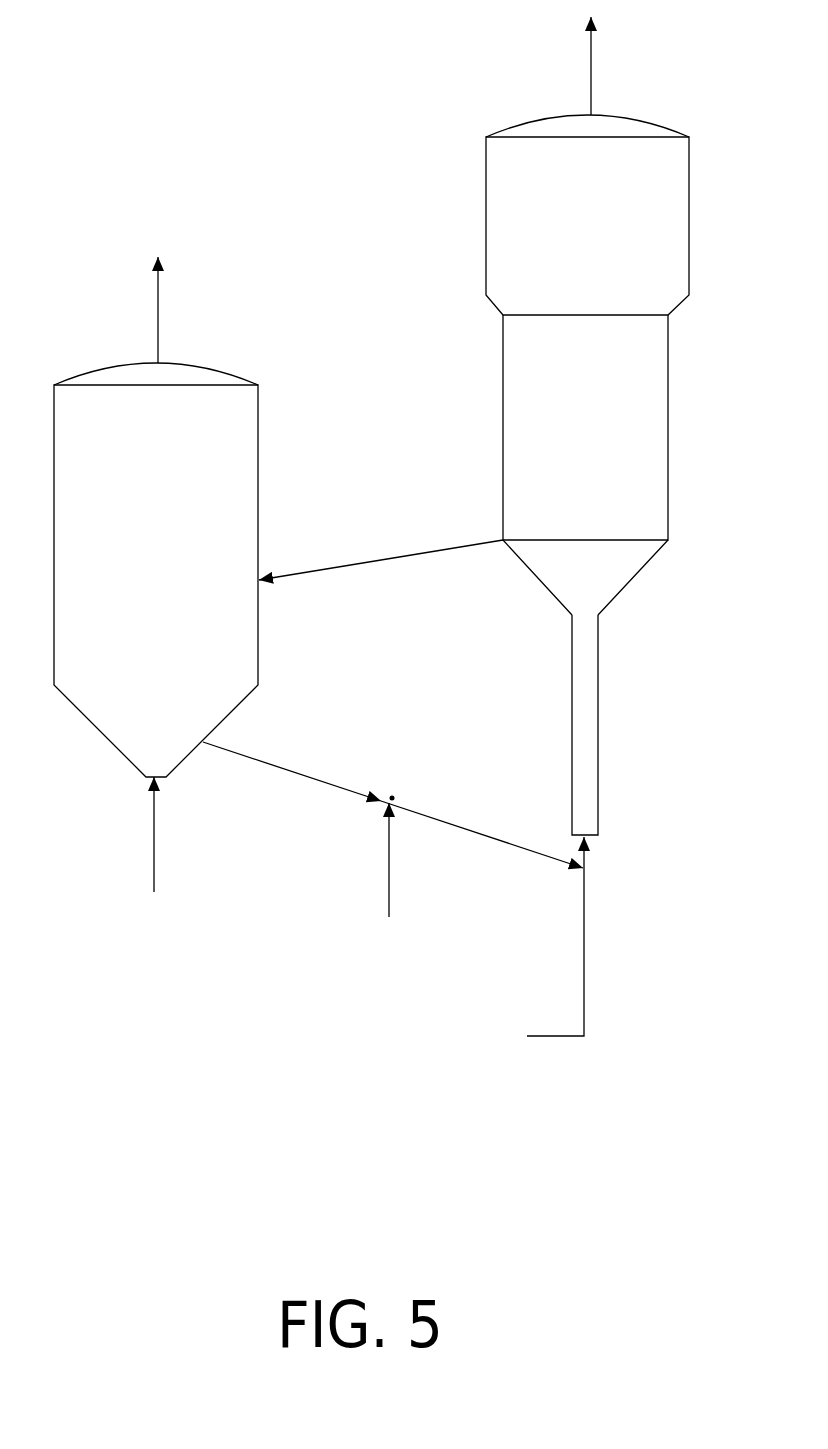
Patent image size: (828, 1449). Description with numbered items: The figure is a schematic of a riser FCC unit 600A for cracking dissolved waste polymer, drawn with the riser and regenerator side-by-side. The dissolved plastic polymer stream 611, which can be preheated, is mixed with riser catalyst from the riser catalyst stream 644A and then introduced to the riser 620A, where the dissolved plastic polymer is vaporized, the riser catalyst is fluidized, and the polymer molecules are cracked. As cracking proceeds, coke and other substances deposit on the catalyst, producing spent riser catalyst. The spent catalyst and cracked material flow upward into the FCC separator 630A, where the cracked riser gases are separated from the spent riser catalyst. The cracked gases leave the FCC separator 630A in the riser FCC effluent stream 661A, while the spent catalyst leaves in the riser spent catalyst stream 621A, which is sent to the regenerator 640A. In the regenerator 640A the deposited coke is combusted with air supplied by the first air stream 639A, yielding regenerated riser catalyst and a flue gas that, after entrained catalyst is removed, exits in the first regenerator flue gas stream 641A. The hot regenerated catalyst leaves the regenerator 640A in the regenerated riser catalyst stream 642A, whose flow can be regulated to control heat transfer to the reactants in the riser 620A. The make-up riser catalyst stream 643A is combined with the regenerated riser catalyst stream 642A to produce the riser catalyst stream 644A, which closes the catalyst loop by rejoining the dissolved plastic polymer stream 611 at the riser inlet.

The FCC unit 600A is at (166, 101).
The FCC separator 630A is at (562, 436).
The riser 620A is at (598, 712).
The riser FCC effluent stream 661A is at (591, 50).
The regenerator 640A is at (132, 584).
The first regenerator flue gas stream 641A is at (158, 298).
The first air stream 639A is at (154, 848).
The riser spent catalyst stream 621A is at (367, 560).
The regenerated riser catalyst stream 642A is at (335, 778).
The make-up riser catalyst stream 643A is at (389, 880).
The riser catalyst stream 644A is at (496, 840).
The dissolved plastic polymer stream 611 is at (584, 925).